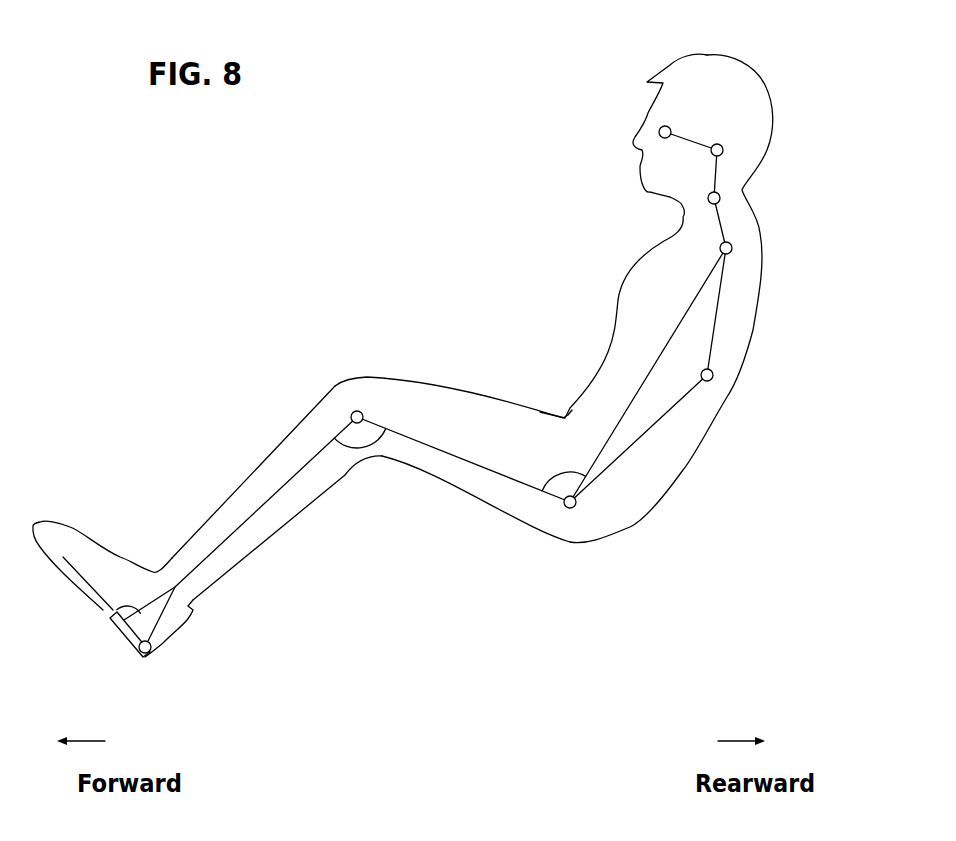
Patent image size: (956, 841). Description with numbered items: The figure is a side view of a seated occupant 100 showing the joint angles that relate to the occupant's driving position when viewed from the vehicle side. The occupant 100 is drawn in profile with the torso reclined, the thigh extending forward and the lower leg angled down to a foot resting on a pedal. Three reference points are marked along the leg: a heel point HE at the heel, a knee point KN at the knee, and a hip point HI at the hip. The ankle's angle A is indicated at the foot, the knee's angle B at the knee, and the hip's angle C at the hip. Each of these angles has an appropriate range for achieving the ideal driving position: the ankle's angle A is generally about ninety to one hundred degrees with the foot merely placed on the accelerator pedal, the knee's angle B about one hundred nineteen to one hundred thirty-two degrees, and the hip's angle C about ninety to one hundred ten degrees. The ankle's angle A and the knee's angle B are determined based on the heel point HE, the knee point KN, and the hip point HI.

The occupant 100 is at (780, 50).
The knee point KN is at (359, 410).
The hip point HI is at (569, 509).
The heel point HE is at (152, 649).
The ankle's angle A is at (130, 611).
The knee's angle B is at (370, 455).
The hip's angle C is at (583, 463).